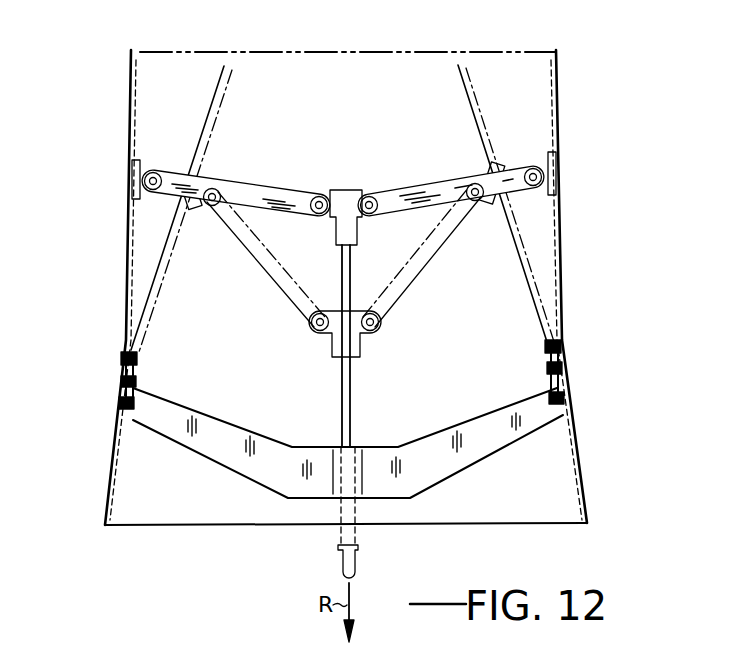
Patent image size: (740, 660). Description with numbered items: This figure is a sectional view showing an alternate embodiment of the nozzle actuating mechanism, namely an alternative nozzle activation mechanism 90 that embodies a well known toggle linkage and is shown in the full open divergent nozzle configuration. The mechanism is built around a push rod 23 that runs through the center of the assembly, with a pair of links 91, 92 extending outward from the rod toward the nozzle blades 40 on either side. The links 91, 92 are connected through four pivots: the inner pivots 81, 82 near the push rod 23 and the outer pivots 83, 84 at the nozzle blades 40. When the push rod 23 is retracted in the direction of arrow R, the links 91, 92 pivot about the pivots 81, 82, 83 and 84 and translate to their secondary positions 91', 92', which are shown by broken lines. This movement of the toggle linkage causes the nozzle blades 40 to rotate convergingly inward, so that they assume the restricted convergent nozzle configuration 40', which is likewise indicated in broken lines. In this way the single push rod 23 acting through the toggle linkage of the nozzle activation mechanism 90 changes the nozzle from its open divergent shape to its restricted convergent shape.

The nozzle blades 40 is at (345, 287).
The restricted convergent nozzle configuration 40' is at (343, 178).
The pivot 84 is at (153, 170).
The pivot 83 is at (531, 165).
The nozzle activation mechanism 90 is at (320, 172).
The link 92 is at (236, 164).
The link 91 is at (451, 153).
The pivot 82 is at (322, 195).
The pivot 81 is at (375, 210).
The secondary position of link 92' is at (264, 262).
The secondary position of link 91' is at (432, 256).
The push rod 23 is at (340, 397).